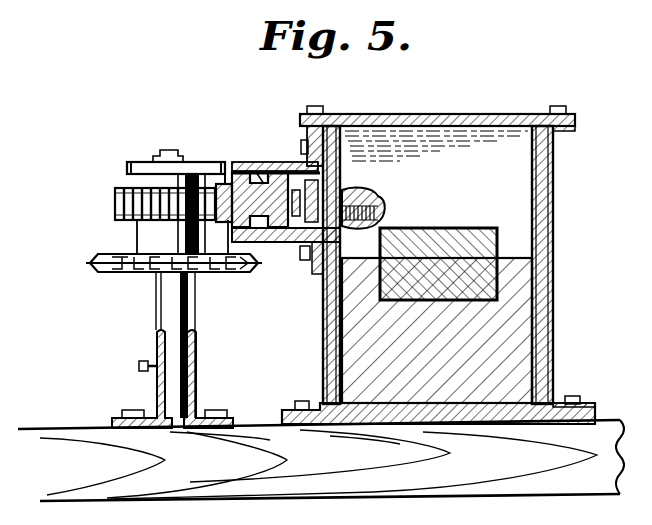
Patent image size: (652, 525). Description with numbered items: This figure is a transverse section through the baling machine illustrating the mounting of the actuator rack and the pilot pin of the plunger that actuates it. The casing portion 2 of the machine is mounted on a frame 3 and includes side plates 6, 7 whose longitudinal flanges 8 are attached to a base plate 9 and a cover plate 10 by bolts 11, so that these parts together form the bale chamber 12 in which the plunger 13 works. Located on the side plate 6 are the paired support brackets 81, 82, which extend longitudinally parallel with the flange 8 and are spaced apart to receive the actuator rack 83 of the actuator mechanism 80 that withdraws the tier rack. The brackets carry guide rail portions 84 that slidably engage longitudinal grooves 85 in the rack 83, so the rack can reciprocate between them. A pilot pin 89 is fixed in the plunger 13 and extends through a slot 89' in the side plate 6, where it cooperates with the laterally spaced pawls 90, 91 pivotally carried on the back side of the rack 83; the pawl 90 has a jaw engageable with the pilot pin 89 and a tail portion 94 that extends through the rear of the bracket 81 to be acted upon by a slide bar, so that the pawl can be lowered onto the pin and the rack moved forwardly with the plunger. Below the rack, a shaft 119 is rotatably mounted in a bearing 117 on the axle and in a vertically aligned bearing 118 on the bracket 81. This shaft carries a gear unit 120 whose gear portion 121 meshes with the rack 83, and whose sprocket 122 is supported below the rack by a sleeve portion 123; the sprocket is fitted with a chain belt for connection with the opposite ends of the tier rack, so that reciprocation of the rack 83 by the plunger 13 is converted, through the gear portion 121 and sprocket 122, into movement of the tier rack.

The casing portion 2 is at (553, 318).
The frame 3 is at (350, 490).
The side plate 6 is at (323, 368).
The side plate 7 is at (552, 374).
The longitudinal flange 8 is at (582, 397).
The base plate 9 is at (540, 425).
The cover plate 10 is at (440, 114).
The bolt 11 is at (318, 112).
The bale chamber 12 is at (505, 170).
The plunger 13 is at (554, 248).
The actuator mechanism 80 is at (256, 273).
The support bracket 81 is at (262, 183).
The support bracket 82 is at (292, 244).
The actuator rack 83 is at (226, 188).
The guide rail portion 84 is at (272, 170).
The longitudinal groove 85 is at (256, 174).
The pilot pin 89 is at (382, 208).
The slot 89' is at (396, 190).
The pawl 90 is at (362, 198).
The pawl 91 is at (375, 160).
The tail portion 94 is at (337, 130).
The bearing 117 is at (202, 408).
The bearing 118 is at (158, 160).
The shaft 119 is at (180, 144).
The gear unit 120 is at (130, 230).
The gear portion 121 is at (116, 195).
The sprocket 122 is at (145, 276).
The sleeve portion 123 is at (159, 382).